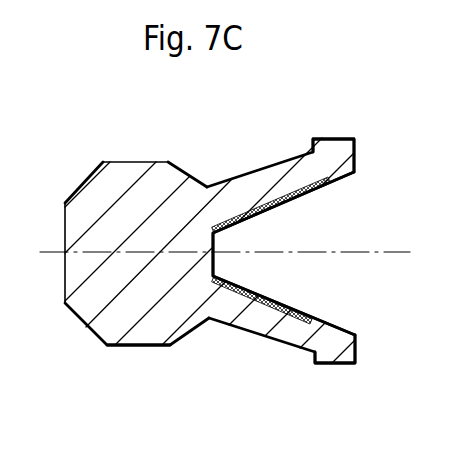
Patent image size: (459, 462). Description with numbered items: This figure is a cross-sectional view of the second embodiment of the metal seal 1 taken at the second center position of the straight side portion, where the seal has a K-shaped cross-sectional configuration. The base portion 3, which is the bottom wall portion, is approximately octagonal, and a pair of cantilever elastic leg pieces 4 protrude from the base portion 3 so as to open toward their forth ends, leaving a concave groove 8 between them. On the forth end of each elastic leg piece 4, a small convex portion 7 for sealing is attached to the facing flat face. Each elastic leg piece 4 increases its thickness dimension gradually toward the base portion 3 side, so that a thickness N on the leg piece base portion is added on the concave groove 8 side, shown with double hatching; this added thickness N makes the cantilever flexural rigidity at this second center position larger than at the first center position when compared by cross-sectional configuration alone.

The metal seal 1 is at (116, 155).
The base portion 3 is at (95, 215).
The elastic leg piece 4 is at (282, 172).
The small convex portion 7 is at (333, 138).
The concave groove 8 is at (272, 273).
The thickness on leg piece base portion N is at (233, 212).